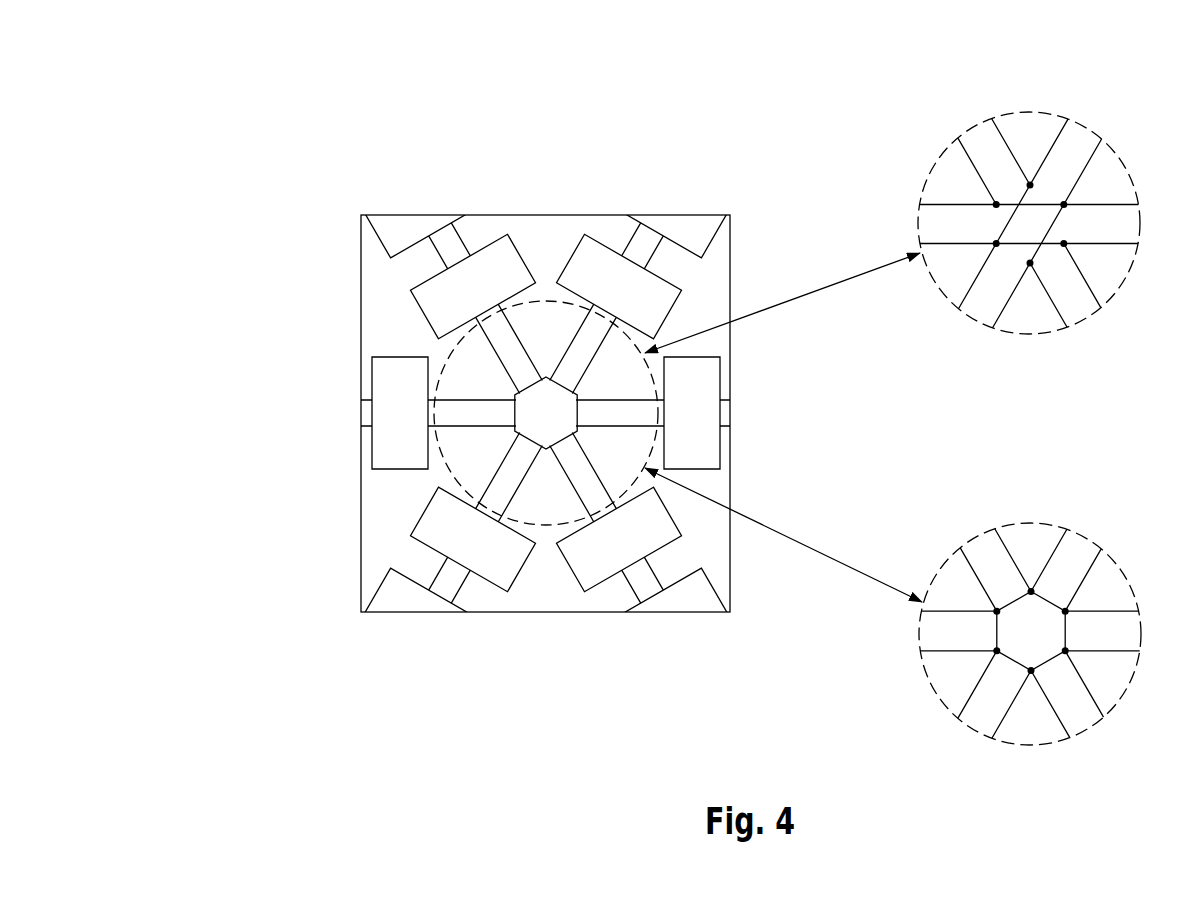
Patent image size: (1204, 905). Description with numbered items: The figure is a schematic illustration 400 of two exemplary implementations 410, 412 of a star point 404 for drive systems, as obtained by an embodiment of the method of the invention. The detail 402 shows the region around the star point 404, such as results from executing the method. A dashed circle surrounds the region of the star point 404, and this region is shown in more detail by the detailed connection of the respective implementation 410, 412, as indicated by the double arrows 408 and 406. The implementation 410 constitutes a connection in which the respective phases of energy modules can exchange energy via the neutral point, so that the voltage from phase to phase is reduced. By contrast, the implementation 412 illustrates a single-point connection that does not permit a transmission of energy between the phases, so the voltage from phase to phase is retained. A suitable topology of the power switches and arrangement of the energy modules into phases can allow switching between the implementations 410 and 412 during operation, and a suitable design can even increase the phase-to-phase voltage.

The schematic illustration 400 is at (234, 147).
The detail 402 is at (470, 213).
The star point 404 is at (541, 421).
The double arrow 406 is at (822, 553).
The double arrow 408 is at (830, 283).
The implementation 410 is at (1108, 302).
The implementation 412 is at (1053, 528).